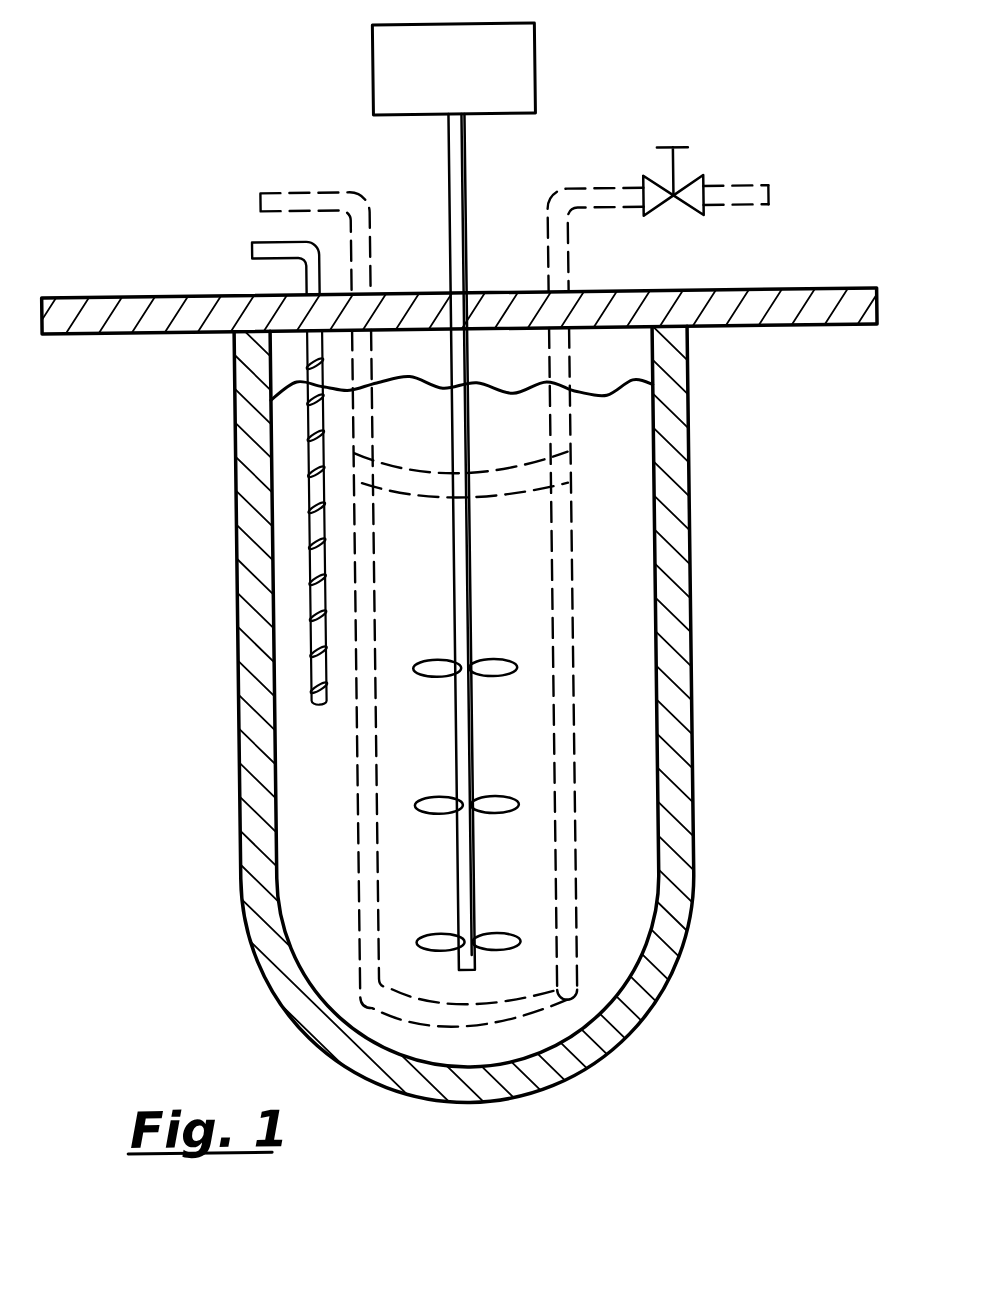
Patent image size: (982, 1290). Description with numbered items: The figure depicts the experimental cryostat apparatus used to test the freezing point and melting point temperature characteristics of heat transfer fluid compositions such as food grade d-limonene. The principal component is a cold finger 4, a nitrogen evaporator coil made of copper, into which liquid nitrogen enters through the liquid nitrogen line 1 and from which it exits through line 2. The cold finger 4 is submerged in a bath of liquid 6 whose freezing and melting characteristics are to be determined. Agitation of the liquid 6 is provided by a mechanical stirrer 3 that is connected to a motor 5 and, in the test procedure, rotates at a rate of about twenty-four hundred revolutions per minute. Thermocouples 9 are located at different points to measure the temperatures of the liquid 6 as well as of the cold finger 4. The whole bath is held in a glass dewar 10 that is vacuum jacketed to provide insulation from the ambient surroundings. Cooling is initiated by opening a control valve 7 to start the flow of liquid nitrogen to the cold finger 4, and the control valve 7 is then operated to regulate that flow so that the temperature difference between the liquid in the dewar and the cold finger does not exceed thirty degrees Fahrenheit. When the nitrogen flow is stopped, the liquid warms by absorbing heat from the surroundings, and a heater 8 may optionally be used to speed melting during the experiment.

The liquid nitrogen line 1 is at (614, 190).
The line 2 is at (309, 190).
The mechanical stirrer 3 is at (473, 568).
The cold finger 4 is at (568, 659).
The motor 5 is at (380, 56).
The liquid 6 is at (412, 862).
The control valve 7 is at (689, 150).
The heater 8 is at (305, 528).
The thermocouples 9 is at (537, 486).
The glass dewar 10 is at (691, 731).